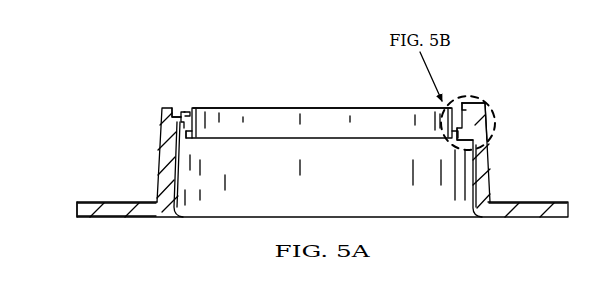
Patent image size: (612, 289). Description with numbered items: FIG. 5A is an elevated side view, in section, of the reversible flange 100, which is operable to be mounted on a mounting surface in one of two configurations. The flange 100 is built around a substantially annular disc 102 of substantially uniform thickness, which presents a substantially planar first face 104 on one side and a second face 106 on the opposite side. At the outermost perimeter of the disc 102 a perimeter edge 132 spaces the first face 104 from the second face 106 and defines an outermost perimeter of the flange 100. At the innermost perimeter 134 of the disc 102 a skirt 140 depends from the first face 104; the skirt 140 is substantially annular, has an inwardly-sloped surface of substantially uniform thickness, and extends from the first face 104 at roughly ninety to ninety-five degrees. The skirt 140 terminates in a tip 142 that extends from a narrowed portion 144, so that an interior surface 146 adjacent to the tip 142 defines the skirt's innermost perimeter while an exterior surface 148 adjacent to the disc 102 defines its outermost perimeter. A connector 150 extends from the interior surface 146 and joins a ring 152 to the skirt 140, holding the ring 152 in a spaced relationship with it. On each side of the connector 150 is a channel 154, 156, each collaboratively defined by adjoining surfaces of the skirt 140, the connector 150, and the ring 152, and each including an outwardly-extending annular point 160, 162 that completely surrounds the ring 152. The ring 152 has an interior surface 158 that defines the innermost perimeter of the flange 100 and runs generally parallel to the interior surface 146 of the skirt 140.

The reversible flange 100 is at (118, 45).
The disc 102 is at (297, 212).
The first face 104 is at (108, 202).
The second face 106 is at (128, 219).
The perimeter edge 132 is at (77, 210).
The innermost perimeter 134 is at (156, 202).
The skirt 140 is at (491, 160).
The tip 142 is at (479, 102).
The narrowed portion 144 is at (496, 109).
The interior surface 146 is at (470, 188).
The exterior surface 148 is at (494, 200).
The connector 150 is at (465, 101).
The ring 152 is at (361, 109).
The channel 154 is at (175, 105).
The channel 156 is at (186, 141).
The interior surface 158 is at (323, 113).
The annular point 160 is at (184, 112).
The annular point 162 is at (186, 139).